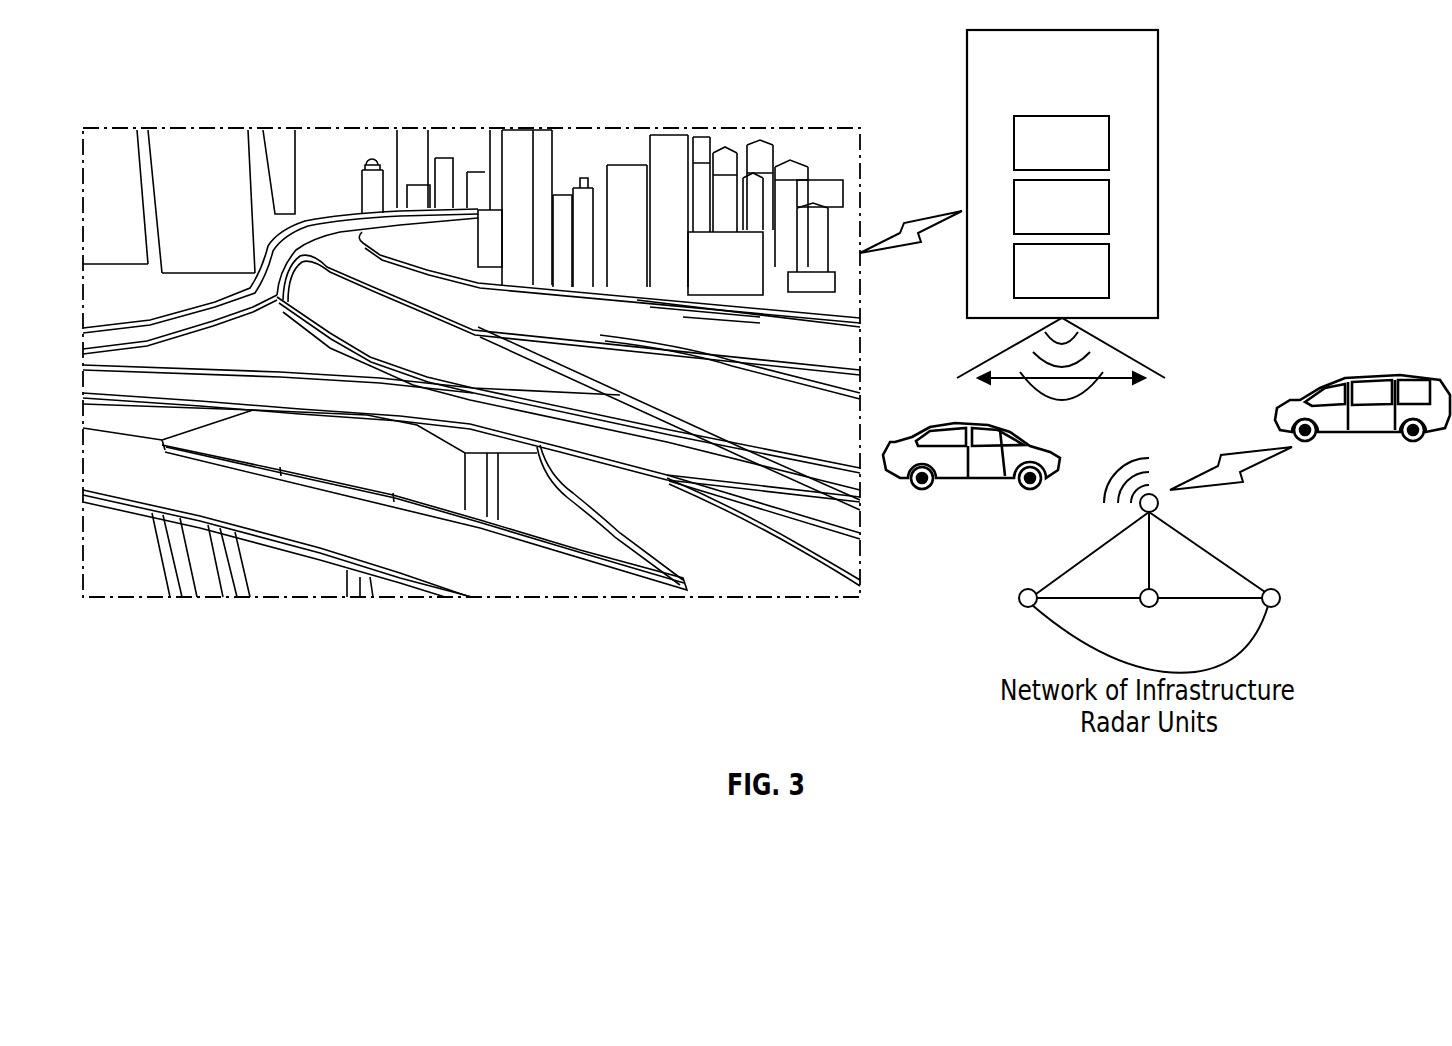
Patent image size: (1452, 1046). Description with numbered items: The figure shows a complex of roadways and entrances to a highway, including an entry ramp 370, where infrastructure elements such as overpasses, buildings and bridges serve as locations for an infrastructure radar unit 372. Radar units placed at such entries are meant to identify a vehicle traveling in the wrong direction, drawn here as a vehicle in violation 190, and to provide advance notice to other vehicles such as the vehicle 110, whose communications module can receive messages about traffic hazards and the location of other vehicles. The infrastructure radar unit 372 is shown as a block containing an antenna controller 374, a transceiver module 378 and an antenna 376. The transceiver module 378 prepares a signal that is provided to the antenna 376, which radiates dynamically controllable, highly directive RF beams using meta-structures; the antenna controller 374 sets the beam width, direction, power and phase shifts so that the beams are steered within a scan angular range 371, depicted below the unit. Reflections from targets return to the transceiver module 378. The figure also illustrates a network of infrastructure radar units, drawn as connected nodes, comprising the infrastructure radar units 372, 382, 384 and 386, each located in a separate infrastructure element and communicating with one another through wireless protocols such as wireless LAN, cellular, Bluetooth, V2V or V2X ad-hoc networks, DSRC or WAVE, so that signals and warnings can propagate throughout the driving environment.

The entry ramp 370 is at (777, 580).
The infrastructure radar unit 372 is at (1160, 118).
The antenna controller 374 is at (1082, 156).
The transceiver module 378 is at (1082, 222).
The antenna 376 is at (1082, 288).
The scan angular range 371 is at (1127, 373).
The vehicle in violation 190 is at (976, 482).
The vehicle 110 is at (1358, 437).
The infrastructure radar unit 382 is at (1158, 507).
The infrastructure radar unit 384 is at (1150, 608).
The infrastructure radar unit 386 is at (1033, 590).